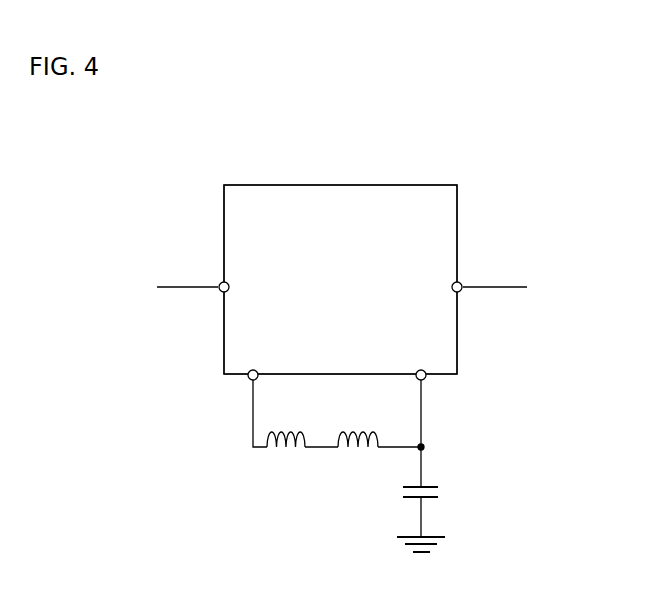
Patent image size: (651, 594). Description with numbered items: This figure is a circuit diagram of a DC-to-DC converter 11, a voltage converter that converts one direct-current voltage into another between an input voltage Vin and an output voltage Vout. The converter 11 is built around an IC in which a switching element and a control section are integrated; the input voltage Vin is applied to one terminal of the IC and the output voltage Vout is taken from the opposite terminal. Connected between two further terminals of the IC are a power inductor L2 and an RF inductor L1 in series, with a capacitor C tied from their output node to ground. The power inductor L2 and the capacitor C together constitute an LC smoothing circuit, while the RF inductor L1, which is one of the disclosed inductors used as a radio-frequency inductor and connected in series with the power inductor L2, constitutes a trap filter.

The DC-to-DC converter 11 is at (506, 216).
The element IC is at (340, 279).
The RF inductor L1 is at (358, 425).
The power inductor L2 is at (286, 425).
The capacitor C is at (432, 495).
The input voltage Vin is at (170, 288).
The output voltage Vout is at (515, 288).